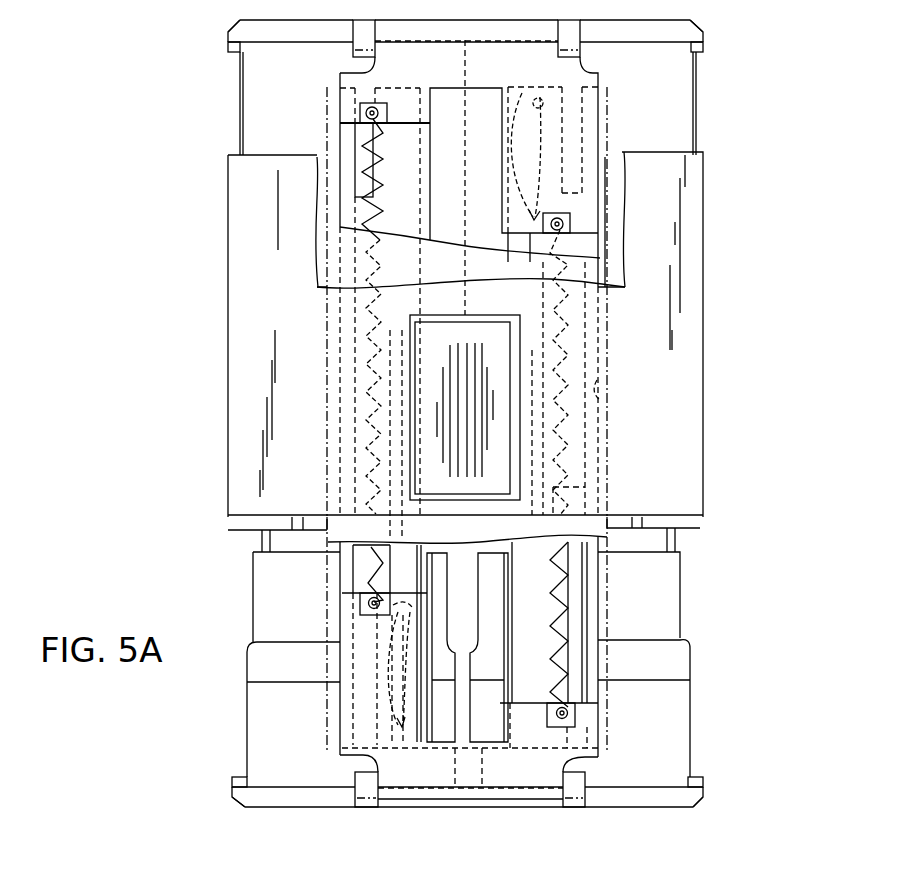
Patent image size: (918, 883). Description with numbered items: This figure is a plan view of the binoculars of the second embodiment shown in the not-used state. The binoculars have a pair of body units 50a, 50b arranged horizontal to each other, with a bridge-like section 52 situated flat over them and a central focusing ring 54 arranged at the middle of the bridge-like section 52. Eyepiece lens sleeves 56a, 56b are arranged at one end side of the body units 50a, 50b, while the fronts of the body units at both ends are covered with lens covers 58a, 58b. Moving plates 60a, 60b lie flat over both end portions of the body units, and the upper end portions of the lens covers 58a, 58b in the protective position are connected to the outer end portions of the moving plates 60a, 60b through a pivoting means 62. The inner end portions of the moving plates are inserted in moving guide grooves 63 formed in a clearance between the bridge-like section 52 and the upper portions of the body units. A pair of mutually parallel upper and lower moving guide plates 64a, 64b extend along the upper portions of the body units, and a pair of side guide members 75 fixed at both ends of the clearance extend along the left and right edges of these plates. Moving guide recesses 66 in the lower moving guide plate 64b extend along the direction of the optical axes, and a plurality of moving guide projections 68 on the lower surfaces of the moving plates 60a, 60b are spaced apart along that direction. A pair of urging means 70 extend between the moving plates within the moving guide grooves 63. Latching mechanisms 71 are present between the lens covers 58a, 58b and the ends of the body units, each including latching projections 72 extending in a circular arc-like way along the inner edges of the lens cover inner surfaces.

The body unit 50a is at (240, 131).
The body unit 50b is at (700, 131).
The bridge-like section 52 is at (700, 470).
The central focusing ring 54 is at (505, 463).
The eyepiece lens sleeve 56a is at (247, 690).
The eyepiece lens sleeve 56b is at (693, 705).
The lens cover 58a is at (607, 794).
The lens cover 58b is at (636, 30).
The moving plate 60a is at (466, 758).
The moving plate 60b is at (466, 75).
The pivoting means 62 is at (353, 50).
The moving guide groove 63 is at (600, 392).
The moving guide plate 64a is at (327, 98).
The moving guide plate 64b is at (513, 247).
The moving guide recess 66 is at (520, 240).
The moving guide projection 68 is at (535, 97).
The urging means 70 is at (370, 355).
The latching mechanism 71 is at (706, 42).
The latching projection 72 is at (232, 52).
The side guide member 75 is at (330, 195).